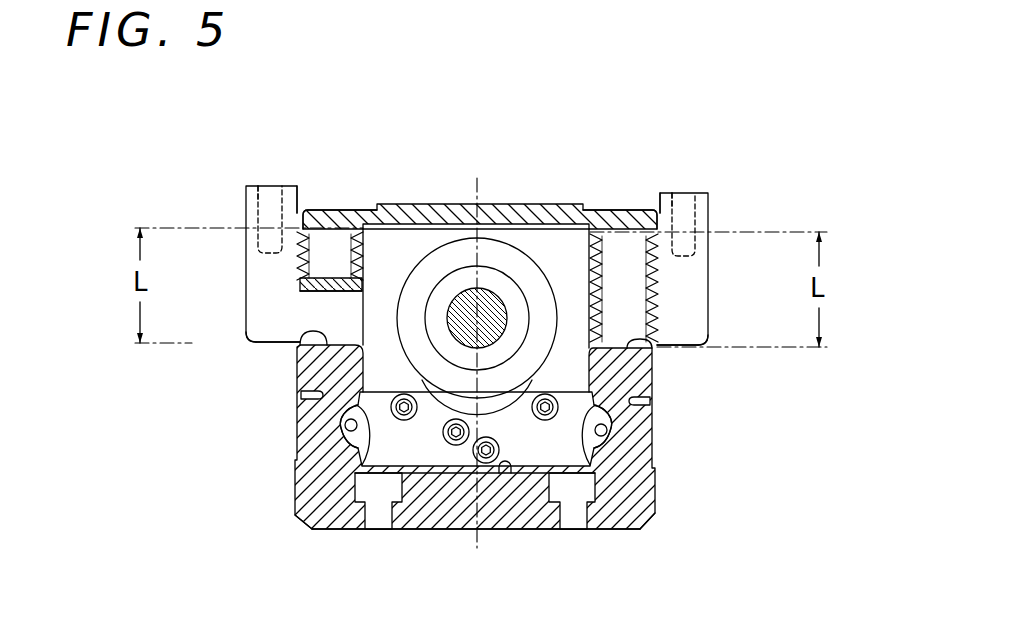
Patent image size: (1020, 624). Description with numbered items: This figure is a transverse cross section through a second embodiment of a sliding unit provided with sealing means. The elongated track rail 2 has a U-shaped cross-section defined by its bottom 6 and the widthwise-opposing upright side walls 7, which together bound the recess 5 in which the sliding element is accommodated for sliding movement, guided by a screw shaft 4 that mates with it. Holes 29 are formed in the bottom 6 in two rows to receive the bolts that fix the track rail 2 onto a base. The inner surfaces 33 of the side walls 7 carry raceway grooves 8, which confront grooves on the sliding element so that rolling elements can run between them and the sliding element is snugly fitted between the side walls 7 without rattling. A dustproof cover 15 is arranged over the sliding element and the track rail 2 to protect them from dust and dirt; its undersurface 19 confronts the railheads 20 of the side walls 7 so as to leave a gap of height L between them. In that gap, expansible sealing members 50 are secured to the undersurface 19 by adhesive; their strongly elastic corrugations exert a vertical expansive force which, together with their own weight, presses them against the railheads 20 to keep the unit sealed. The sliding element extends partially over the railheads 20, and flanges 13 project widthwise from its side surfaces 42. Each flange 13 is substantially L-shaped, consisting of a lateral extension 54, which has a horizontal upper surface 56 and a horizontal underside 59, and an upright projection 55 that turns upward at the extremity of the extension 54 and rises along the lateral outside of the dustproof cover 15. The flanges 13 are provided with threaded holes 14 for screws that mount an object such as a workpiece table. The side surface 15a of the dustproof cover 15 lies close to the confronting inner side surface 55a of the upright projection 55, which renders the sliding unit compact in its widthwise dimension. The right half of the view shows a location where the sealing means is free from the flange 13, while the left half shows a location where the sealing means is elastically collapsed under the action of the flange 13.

The track rail 2 is at (658, 508).
The screw shaft 4 is at (460, 292).
The U-shaped recess 5 is at (509, 471).
The bottom 6 is at (448, 505).
The side walls 7 is at (343, 427).
The raceway grooves 8 is at (350, 450).
The flanges 13 is at (238, 262).
The threaded holes 14 is at (270, 240).
The dustproof cover 15 is at (503, 205).
The side surface of dustproof cover 15a is at (310, 212).
The undersurface 19 is at (333, 228).
The railheads 20 is at (299, 334).
The holes 29 is at (376, 517).
The inner surfaces 33 is at (318, 491).
The side surfaces 42 is at (360, 365).
The expansible sealing members 50 is at (327, 230).
The lateral extension 54 is at (312, 320).
The upright projection 55 is at (255, 216).
The inner side surface of upright projection 55a is at (303, 194).
The upper surface 56 is at (290, 291).
The underside 59 is at (280, 343).